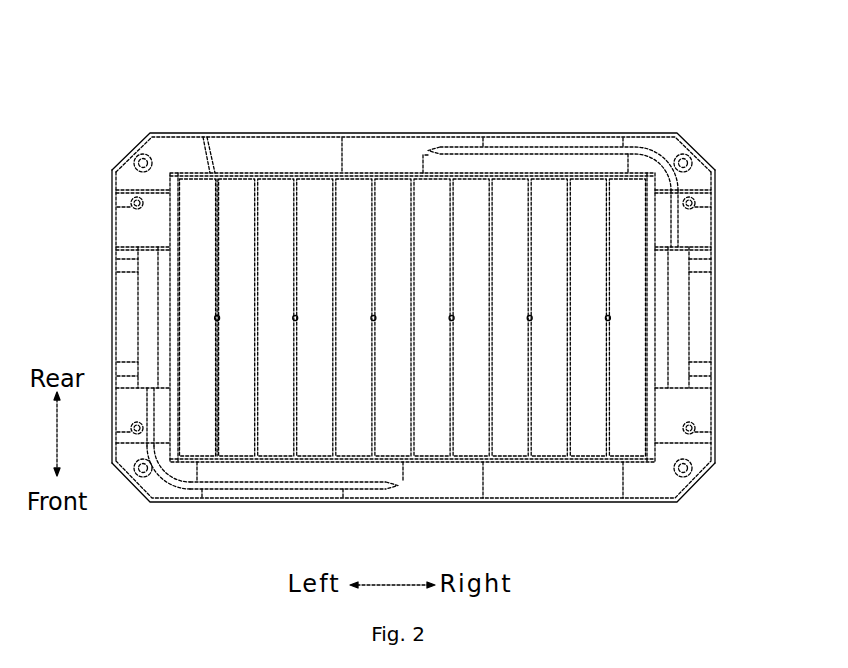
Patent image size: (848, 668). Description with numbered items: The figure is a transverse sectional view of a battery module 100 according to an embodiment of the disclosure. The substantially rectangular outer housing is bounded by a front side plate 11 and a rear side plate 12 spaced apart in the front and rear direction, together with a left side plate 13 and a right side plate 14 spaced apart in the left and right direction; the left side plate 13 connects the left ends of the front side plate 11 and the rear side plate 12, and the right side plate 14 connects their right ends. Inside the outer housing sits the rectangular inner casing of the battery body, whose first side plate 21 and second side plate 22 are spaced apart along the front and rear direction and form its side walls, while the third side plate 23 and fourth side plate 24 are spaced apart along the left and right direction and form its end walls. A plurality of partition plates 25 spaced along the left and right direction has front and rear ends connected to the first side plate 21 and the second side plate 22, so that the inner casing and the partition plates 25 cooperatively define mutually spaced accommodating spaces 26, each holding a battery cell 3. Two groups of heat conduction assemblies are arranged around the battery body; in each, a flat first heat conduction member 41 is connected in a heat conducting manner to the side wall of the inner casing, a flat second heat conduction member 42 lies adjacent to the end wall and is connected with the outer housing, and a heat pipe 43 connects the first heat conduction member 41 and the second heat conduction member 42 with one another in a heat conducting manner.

The battery module 100 is at (400, 58).
The battery cell 3 is at (416, 321).
The front side plate 11 is at (447, 498).
The rear side plate 12 is at (413, 133).
The left side plate 13 is at (113, 318).
The right side plate 14 is at (716, 303).
The first side plate 21 is at (557, 462).
The second side plate 22 is at (516, 174).
The third side plate 23 is at (168, 280).
The fourth side plate 24 is at (657, 233).
The partition plate 25 is at (214, 177).
The accommodating space 26 is at (240, 178).
The first heat conduction member 41 is at (582, 166).
The second heat conduction member 42 is at (147, 305).
The heat pipe 43 is at (662, 152).